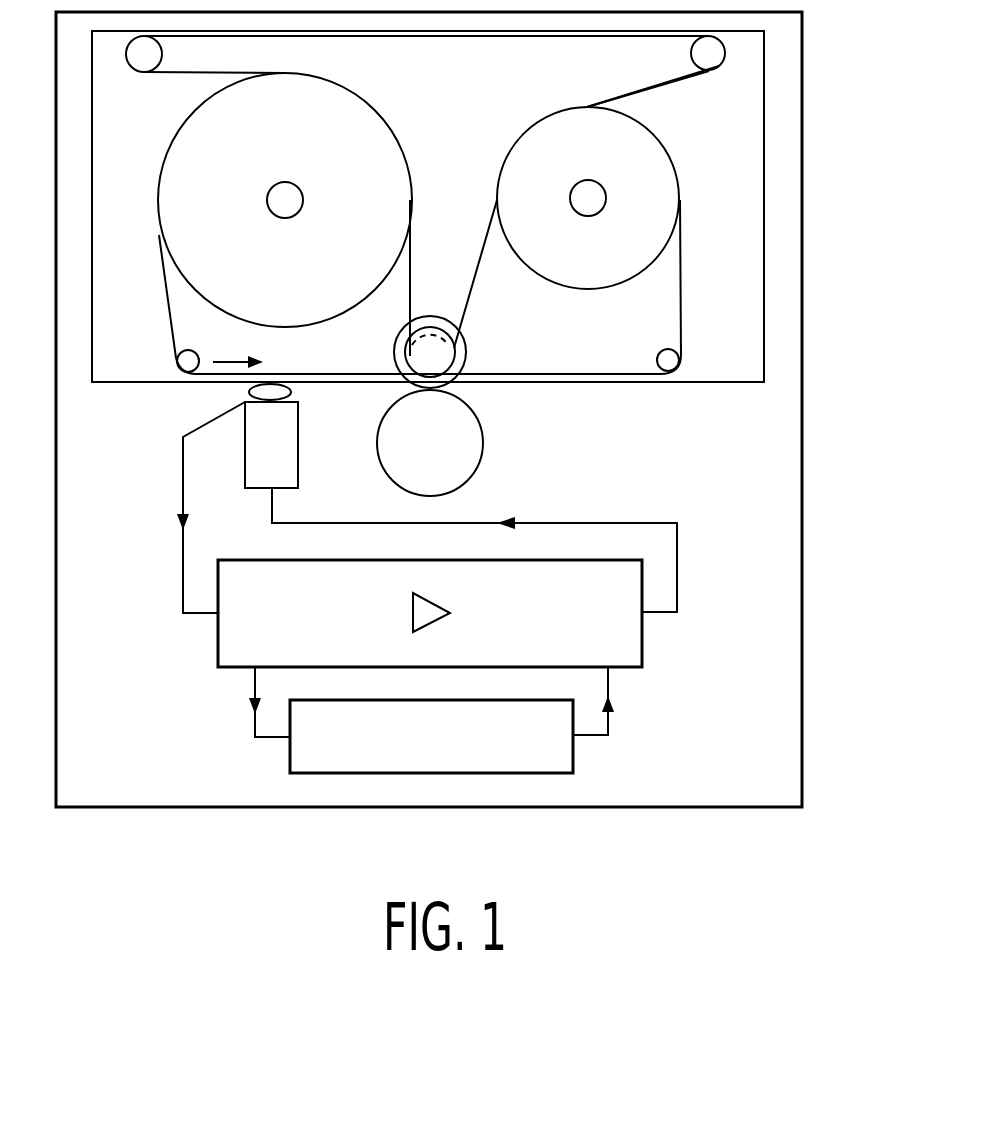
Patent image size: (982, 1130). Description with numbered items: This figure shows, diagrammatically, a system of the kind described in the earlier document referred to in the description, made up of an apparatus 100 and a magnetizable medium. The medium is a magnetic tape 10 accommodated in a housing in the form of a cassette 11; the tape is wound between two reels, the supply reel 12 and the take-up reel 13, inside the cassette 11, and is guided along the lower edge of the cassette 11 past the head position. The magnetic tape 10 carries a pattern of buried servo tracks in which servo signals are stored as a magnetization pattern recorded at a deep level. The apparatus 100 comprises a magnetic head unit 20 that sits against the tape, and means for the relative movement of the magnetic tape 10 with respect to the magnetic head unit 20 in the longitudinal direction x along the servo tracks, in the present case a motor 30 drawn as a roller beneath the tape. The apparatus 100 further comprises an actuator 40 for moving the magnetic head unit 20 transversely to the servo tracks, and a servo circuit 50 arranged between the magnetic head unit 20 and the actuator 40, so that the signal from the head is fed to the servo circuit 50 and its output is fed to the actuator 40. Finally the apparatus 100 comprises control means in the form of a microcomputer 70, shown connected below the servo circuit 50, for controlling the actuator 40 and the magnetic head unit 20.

The apparatus 100 is at (802, 487).
The cassette 11 is at (764, 174).
The magnetic tape 10 is at (172, 333).
The supply reel 12 is at (282, 182).
The take-up reel 13 is at (587, 180).
The magnetic head unit 20 is at (296, 396).
The motor 30 is at (484, 440).
The actuator 40 is at (245, 458).
The servo circuit 50 is at (218, 645).
The microcomputer 70 is at (290, 757).